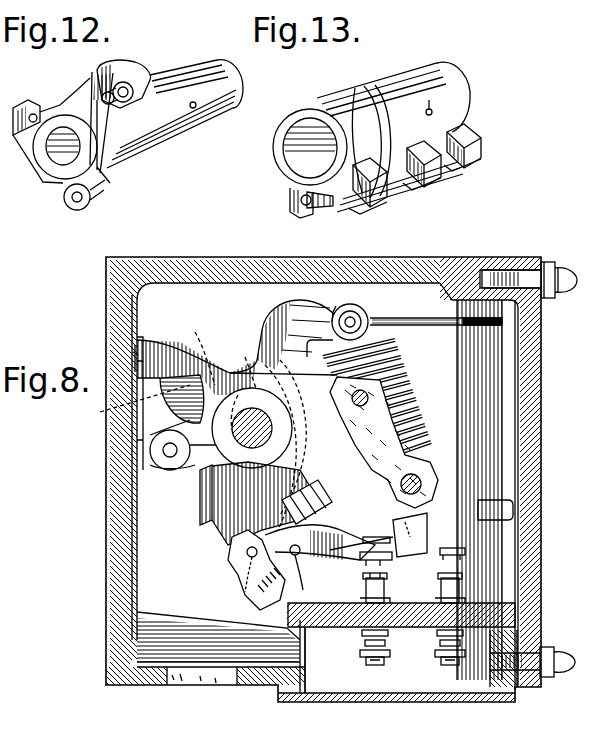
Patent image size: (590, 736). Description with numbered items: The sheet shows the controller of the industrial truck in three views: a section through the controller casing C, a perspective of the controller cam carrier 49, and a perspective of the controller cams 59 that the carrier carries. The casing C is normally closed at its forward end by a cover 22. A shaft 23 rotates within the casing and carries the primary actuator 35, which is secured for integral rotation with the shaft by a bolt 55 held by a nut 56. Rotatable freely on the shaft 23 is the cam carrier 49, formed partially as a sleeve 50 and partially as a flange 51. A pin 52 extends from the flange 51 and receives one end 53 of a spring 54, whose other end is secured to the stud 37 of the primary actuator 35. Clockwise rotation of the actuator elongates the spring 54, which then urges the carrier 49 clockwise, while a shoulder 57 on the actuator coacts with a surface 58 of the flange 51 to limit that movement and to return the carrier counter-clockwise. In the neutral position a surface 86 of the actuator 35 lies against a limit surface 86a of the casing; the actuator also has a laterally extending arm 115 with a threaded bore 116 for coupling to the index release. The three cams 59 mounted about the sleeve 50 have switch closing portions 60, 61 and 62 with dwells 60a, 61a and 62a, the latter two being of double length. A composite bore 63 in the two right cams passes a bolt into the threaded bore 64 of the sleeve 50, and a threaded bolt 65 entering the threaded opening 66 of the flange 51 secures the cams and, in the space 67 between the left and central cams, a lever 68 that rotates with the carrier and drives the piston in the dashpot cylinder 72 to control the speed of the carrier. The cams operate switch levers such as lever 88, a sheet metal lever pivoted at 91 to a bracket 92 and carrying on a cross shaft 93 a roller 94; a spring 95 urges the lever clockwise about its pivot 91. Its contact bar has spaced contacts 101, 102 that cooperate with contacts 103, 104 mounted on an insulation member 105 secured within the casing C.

In FIG. 8, the cover 22 is at (541, 560).
In FIG. 8, the shaft 23 is at (235, 440).
In FIG. 8, the primary actuator 35 is at (222, 518).
In FIG. 8, the stud 37 is at (421, 486).
In FIG. 12, the controller cam carrier 49 is at (166, 63).
In FIG. 8, the controller cam carrier 49 is at (278, 345).
In FIG. 12, the sleeve 50 is at (158, 128).
In FIG. 12, the flange 51 is at (45, 182).
In FIG. 12, the pin 52 is at (118, 80).
In FIG. 8, the pin 52 is at (347, 308).
In FIG. 8, the end of spring 53 is at (372, 309).
In FIG. 8, the spring 54 is at (410, 370).
In FIG. 8, the bolt 55 is at (248, 378).
In FIG. 8, the nut 56 is at (314, 540).
In FIG. 8, the shoulder 57 is at (195, 340).
In FIG. 12, the surface 58 is at (34, 114).
In FIG. 8, the surface 58 is at (133, 415).
In FIG. 13, the controller cams 59 is at (361, 82).
In FIG. 13, the switch closing portion 60 is at (375, 208).
In FIG. 8, the switch closing portion 60 is at (200, 503).
In FIG. 13, the dwell 60a is at (343, 222).
In FIG. 8, the dwell 60a is at (225, 545).
In FIG. 13, the switch closing portion 61 is at (420, 180).
In FIG. 13, the double length dwell 61a is at (408, 190).
In FIG. 13, the switch closing portion 62 is at (482, 130).
In FIG. 13, the double length dwell 62a is at (455, 168).
In FIG. 13, the composite bore 63 is at (432, 110).
In FIG. 12, the threaded bore 64 is at (193, 110).
In FIG. 13, the threaded bolt 65 is at (303, 202).
In FIG. 12, the threaded opening 66 is at (72, 203).
In FIG. 13, the space 67 is at (430, 108).
In FIG. 8, the lever 68 is at (330, 630).
In FIG. 8, the dashpot cylinder 72 is at (493, 384).
In FIG. 8, the surface 86 is at (151, 347).
In FIG. 8, the limit surface 86a is at (136, 358).
In FIG. 8, the switch lever 88 is at (432, 533).
In FIG. 8, the pivot 91 is at (303, 572).
In FIG. 8, the bracket 92 is at (298, 632).
In FIG. 8, the cross shaft 93 is at (247, 578).
In FIG. 8, the roller 94 is at (232, 570).
In FIG. 8, the spring 95 is at (250, 600).
In FIG. 8, the contact 101 is at (468, 553).
In FIG. 8, the contact 102 is at (386, 560).
In FIG. 8, the contact 103 is at (387, 578).
In FIG. 8, the contact 104 is at (466, 578).
In FIG. 8, the insulation member 105 is at (413, 630).
In FIG. 8, the laterally extending arm 115 is at (160, 460).
In FIG. 8, the threaded bore 116 is at (165, 449).
In FIG. 8, the controller casing C is at (254, 688).